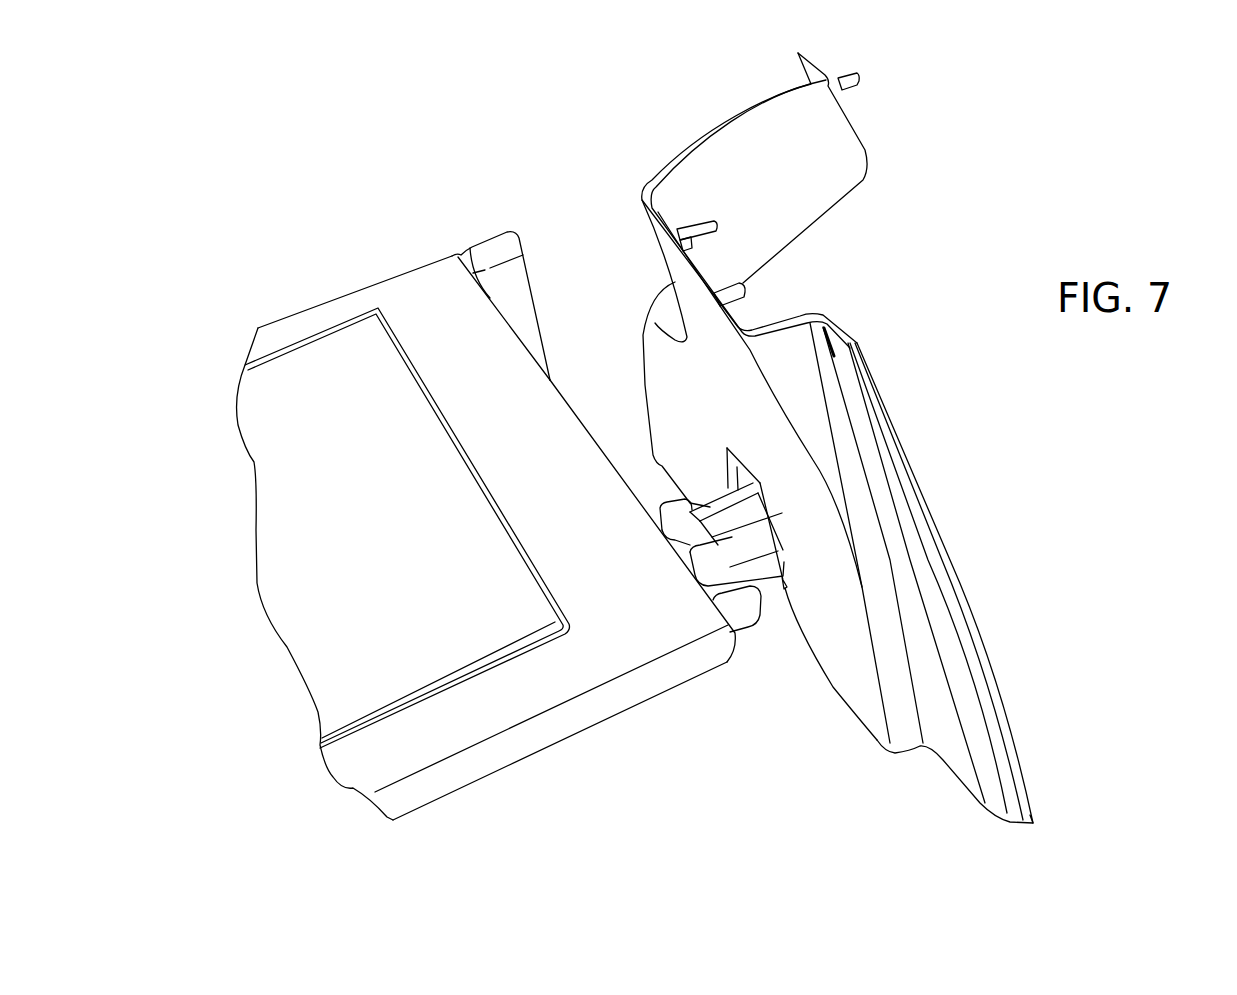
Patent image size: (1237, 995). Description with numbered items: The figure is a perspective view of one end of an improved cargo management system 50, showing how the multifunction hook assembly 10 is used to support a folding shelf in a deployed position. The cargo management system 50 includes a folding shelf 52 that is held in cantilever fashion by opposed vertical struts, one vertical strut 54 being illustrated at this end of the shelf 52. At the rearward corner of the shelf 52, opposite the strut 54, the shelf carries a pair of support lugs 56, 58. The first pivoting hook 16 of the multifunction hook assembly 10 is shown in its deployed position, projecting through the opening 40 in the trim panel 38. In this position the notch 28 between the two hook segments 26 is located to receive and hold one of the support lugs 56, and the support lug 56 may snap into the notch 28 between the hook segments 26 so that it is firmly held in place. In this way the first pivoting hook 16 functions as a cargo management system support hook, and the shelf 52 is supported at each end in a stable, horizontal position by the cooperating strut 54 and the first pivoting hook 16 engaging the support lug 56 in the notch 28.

The multifunction hook assembly 10 is at (750, 703).
The first pivoting hook 16 is at (765, 568).
The hook segments 26 is at (678, 513).
The notch 28 is at (697, 552).
The trim panel 38 is at (640, 190).
The opening 40 is at (747, 473).
The cargo management system 50 is at (391, 221).
The folding shelf 52 is at (445, 730).
The vertical strut 54 is at (522, 297).
The support lug 56 is at (687, 533).
The support lug 58 is at (747, 620).